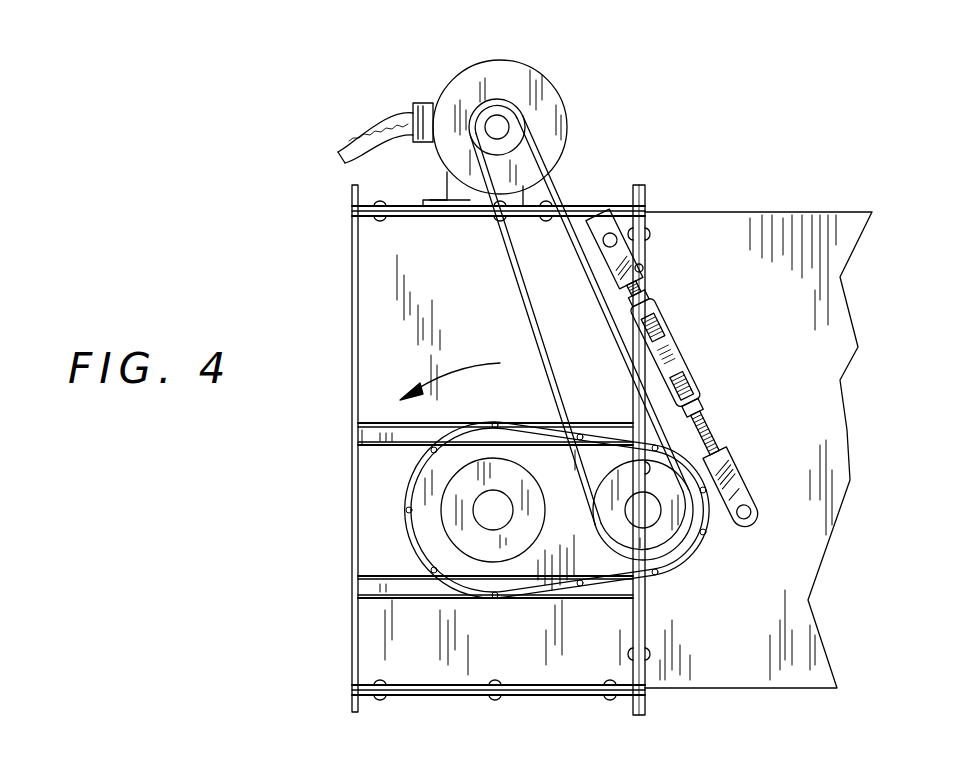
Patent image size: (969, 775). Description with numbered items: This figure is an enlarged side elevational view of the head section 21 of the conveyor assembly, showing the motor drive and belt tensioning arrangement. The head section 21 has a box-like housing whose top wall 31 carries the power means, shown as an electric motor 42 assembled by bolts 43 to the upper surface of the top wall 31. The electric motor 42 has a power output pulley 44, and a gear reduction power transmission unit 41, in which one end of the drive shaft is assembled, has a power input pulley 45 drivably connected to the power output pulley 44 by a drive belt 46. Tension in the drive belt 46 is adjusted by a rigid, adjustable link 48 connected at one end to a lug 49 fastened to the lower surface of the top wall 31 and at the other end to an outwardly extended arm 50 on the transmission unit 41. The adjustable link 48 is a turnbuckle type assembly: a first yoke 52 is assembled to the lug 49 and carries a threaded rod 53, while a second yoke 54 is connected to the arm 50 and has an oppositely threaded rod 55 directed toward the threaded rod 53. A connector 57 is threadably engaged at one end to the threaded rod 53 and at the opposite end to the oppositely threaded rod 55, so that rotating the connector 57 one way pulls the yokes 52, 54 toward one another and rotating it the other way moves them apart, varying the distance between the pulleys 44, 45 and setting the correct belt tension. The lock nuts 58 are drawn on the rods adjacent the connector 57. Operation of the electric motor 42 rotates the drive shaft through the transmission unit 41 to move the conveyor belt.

The head section 21 is at (348, 288).
The top wall 31 is at (410, 218).
The gear reduction, power transmission unit 41 is at (407, 510).
The electric motor 42 is at (546, 97).
The bolts 43 is at (438, 198).
The power output pulley 44 is at (485, 106).
The power input pulley 45 is at (652, 545).
The drive belt 46 is at (504, 256).
The adjustable link 48 is at (693, 347).
The lug 49 is at (614, 249).
The arm 50 is at (718, 528).
The first yoke 52 is at (641, 268).
The threaded rod 53 is at (634, 288).
The second yoke 54 is at (732, 489).
The oppositely threaded rod 55 is at (705, 433).
The connector 57 is at (665, 352).
The lock nut 58 is at (665, 353).